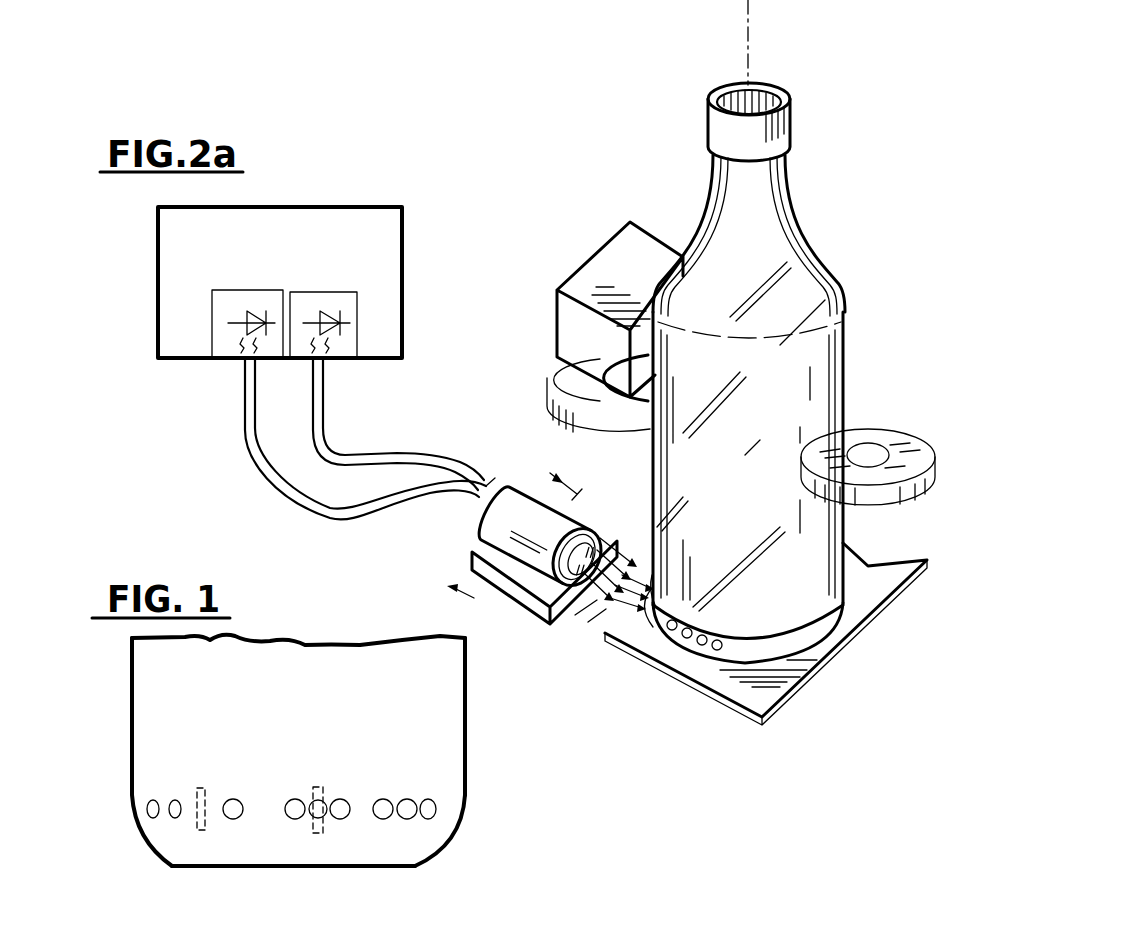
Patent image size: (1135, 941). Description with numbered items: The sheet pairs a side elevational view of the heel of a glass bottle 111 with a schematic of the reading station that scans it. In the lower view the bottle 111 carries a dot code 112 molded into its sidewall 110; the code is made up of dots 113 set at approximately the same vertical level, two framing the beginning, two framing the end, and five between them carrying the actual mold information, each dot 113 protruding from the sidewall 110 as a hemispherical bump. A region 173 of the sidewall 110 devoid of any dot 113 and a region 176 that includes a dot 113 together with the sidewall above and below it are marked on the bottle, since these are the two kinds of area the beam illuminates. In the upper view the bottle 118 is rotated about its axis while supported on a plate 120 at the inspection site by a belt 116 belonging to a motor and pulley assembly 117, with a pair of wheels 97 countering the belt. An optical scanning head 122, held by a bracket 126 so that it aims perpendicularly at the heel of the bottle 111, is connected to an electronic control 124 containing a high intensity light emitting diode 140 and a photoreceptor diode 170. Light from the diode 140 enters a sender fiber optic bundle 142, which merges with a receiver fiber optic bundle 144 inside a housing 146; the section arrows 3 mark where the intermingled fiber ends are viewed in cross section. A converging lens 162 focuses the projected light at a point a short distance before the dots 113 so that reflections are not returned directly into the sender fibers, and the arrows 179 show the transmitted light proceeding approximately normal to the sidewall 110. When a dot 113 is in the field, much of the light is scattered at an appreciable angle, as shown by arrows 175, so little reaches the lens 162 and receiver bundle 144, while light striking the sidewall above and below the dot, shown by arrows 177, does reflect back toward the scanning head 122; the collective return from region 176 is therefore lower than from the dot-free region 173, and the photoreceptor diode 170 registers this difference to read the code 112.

In FIG. 2A, the section line 3 is at (505, 525).
In FIG. 2A, the wheel 97 is at (874, 440).
In FIG. 1, the sidewall 110 is at (462, 793).
In FIG. 2A, the glass bottle 111 is at (838, 270).
In FIG. 1, the glass bottle 111 is at (497, 766).
In FIG. 1, the dot code 112 is at (302, 762).
In FIG. 2A, the dot 113 is at (676, 655).
In FIG. 1, the dot 113 is at (285, 802).
In FIG. 2A, the belt 116 is at (547, 390).
In FIG. 2A, the motor and pulley assembly 117 is at (597, 234).
In FIG. 2A, the bottle 118 is at (752, 70).
In FIG. 2A, the plate 120 is at (827, 668).
In FIG. 2A, the optical scanning head 122 is at (516, 440).
In FIG. 2A, the electronic control 124 is at (403, 240).
In FIG. 2A, the bracket 126 is at (470, 552).
In FIG. 2A, the high intensity light emitting diode 140 is at (258, 308).
In FIG. 2A, the sender fiber optic bundle 142 is at (250, 450).
In FIG. 2A, the receiver fiber optic bundle 144 is at (323, 408).
In FIG. 2A, the housing 146 is at (510, 490).
In FIG. 2A, the converging lens 162 is at (512, 612).
In FIG. 2A, the photoreceptor diode 170 is at (331, 305).
In FIG. 1, the sidewall region devoid of a dot 173 is at (193, 827).
In FIG. 2A, the scattered light arrows 175 is at (637, 613).
In FIG. 2A, the region including the dot 176 is at (660, 595).
In FIG. 1, the region including the dot 176 is at (317, 835).
In FIG. 2A, the reflection arrows 177 is at (650, 647).
In FIG. 2A, the incident light arrows 179 is at (617, 558).